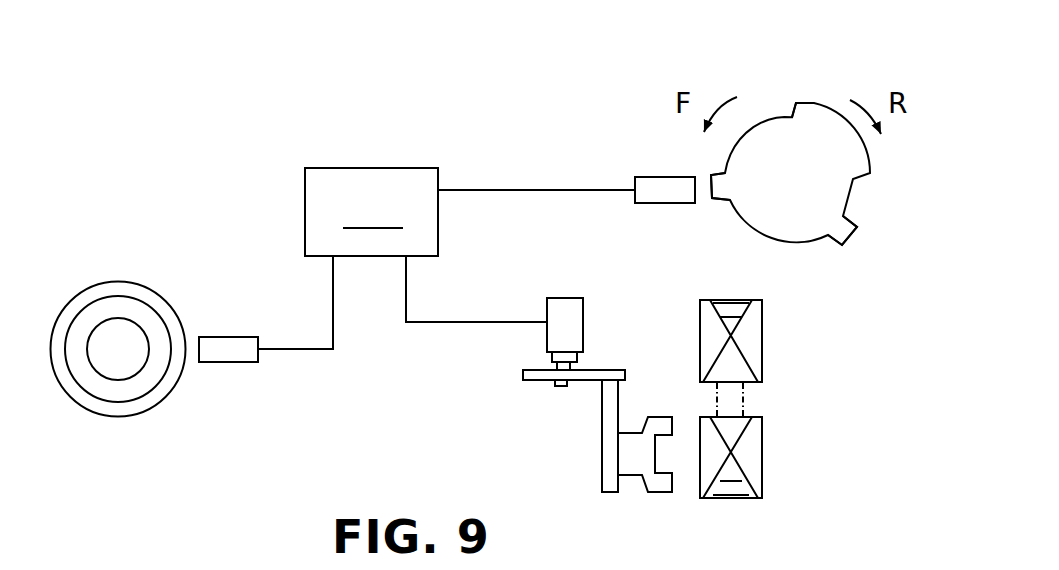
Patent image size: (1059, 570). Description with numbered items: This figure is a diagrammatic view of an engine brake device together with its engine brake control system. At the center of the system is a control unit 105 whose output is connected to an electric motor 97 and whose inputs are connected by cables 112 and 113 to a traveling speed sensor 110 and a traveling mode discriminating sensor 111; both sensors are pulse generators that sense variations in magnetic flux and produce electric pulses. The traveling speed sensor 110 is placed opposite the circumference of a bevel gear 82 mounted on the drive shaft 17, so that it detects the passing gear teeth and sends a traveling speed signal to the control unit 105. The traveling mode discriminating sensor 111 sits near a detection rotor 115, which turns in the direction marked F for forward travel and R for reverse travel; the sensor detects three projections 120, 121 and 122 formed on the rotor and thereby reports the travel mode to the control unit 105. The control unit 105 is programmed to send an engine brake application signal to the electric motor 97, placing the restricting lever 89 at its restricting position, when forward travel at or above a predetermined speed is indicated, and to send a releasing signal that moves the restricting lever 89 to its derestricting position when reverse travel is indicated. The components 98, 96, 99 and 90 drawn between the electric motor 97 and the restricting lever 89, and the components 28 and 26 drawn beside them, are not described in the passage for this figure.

The drive shaft 17 is at (117, 327).
The bevel gear 82 is at (123, 417).
The traveling speed sensor 110 is at (224, 337).
The cable 112 is at (296, 349).
The control unit 105 is at (371, 212).
The cable 113 is at (497, 190).
The traveling mode discriminating sensor 111 is at (650, 177).
The electric motor 97 is at (565, 298).
The plunger 98 is at (580, 358).
The plate 96 is at (590, 379).
The plunger tip 99 is at (555, 385).
The arm 90 is at (610, 448).
The restricting lever 89 is at (660, 488).
The pulley 28 is at (697, 309).
The pulley 26 is at (770, 487).
The detection rotor 115 is at (787, 247).
The projection 121 is at (813, 102).
The projection 120 is at (710, 190).
The projection 122 is at (853, 237).